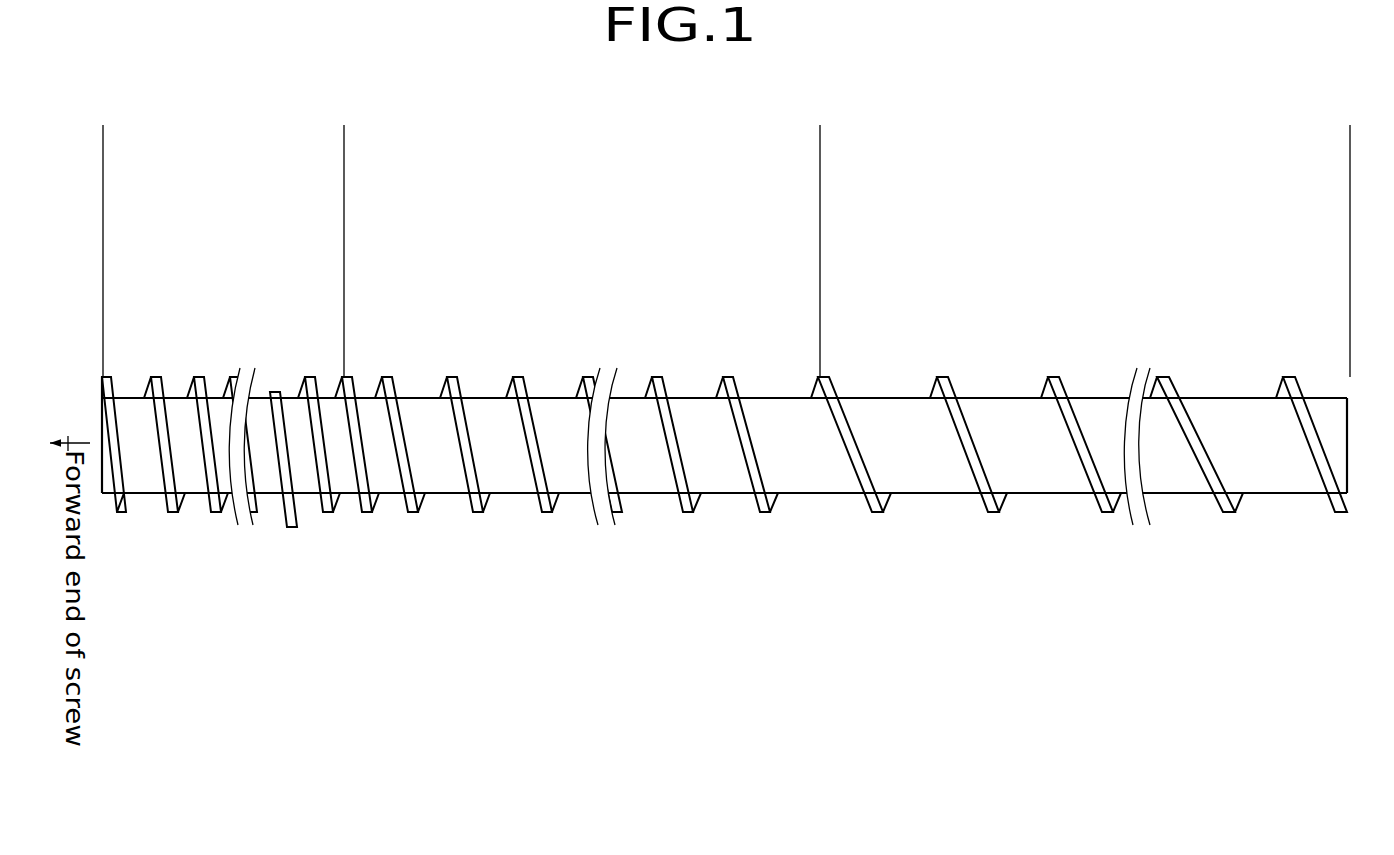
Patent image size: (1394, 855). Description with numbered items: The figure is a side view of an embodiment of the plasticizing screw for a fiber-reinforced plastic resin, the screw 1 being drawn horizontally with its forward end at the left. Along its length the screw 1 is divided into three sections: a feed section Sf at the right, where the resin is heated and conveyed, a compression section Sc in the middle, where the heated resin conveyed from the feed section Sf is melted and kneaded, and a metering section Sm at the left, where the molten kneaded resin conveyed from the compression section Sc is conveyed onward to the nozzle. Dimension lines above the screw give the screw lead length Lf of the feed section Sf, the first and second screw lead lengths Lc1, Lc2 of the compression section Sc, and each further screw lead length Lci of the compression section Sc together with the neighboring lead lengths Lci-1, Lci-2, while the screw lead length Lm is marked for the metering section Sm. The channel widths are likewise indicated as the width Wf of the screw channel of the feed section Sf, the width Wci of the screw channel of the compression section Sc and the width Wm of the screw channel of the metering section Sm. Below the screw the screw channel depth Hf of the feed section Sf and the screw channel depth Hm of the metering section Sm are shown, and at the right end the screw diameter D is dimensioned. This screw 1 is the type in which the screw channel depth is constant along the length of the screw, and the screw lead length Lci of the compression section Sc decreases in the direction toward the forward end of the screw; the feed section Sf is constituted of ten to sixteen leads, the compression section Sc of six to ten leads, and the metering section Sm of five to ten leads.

The screw 1 is at (655, 470).
The metering section Sm is at (344, 142).
The compression section Sc is at (344, 142).
The feed section Sf is at (1350, 142).
The screw lead length of the metering section Lm is at (151, 377).
The width of the screw channel of the metering section Wm is at (128, 337).
The i-th screw lead length of the compression section Lci is at (383, 377).
The screw lead length of the compression section Lci-1 is at (447, 377).
The screw lead length of the compression section Lci-2 is at (513, 377).
The width of the screw channel of the compression section Wci is at (330, 337).
The second screw lead length of the compression section Lc2 is at (653, 377).
The first screw lead length of the compression section Lc1 is at (820, 283).
The screw lead length of the feed section Lf is at (1052, 377).
The width of the screw channel of the feed section Wf is at (949, 377).
The screw channel depth of the metering section Hm is at (193, 460).
The screw channel depth of the feed section Hf is at (922, 460).
The screw diameter D is at (1240, 512).